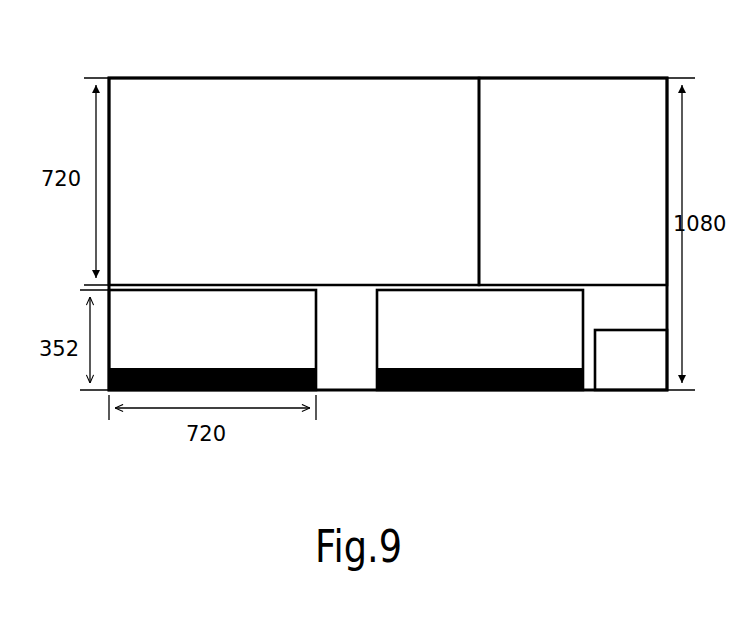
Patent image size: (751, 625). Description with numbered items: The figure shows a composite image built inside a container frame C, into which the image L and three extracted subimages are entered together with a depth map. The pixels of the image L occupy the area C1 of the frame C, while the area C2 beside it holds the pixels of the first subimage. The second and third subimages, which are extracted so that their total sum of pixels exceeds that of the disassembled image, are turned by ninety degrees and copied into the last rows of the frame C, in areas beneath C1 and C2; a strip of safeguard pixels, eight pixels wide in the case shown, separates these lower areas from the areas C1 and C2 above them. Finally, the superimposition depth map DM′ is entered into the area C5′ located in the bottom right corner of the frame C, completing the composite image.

The container frame C is at (82, 96).
The area C1 is at (217, 128).
The area C2 is at (533, 103).
The area C5′ is at (622, 377).
The image L is at (294, 181).
The superimposition depth map DM′ is at (631, 360).